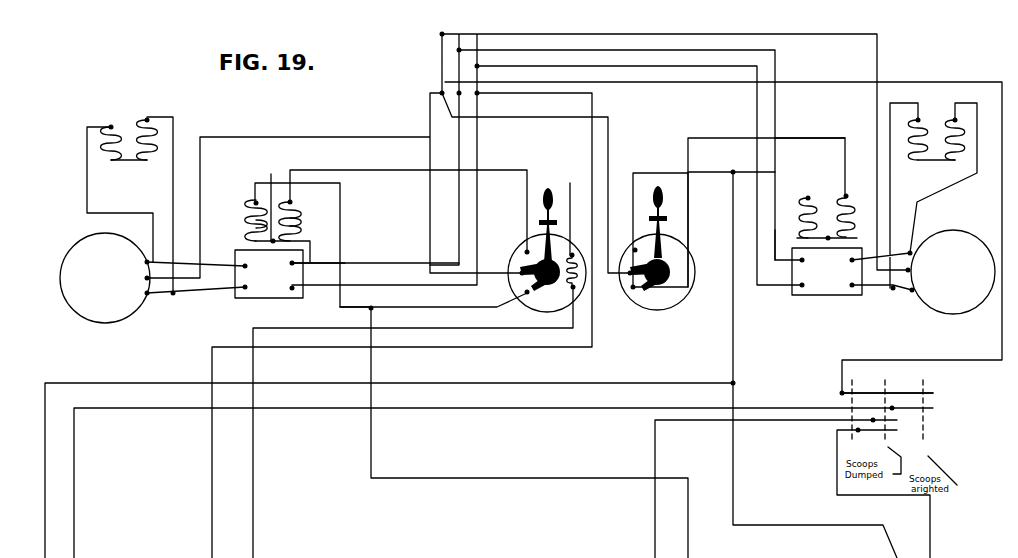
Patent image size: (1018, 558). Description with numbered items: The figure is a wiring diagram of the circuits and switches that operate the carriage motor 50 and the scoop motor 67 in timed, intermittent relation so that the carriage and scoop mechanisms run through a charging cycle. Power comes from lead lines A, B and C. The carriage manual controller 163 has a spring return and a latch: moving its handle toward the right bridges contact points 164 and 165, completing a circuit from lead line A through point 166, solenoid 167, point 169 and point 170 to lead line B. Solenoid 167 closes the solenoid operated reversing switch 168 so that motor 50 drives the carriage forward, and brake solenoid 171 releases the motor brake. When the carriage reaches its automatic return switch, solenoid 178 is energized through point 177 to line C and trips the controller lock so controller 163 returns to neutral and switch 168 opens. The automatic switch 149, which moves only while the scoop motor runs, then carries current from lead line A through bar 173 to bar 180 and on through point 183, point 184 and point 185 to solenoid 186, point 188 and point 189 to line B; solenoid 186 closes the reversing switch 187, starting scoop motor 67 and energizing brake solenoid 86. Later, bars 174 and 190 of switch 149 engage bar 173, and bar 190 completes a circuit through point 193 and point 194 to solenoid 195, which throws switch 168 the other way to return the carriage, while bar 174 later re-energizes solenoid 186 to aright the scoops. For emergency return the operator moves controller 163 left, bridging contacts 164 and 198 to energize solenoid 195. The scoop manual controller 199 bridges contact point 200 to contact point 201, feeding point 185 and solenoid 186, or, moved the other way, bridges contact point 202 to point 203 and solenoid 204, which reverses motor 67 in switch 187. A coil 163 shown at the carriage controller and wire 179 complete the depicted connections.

The lead line A is at (440, 94).
The lead line B is at (460, 132).
The lead line C is at (479, 94).
The carriage motor 50 is at (152, 278).
The scoop motor 67 is at (951, 272).
The brake-releasing solenoid 86 is at (936, 150).
The automatic switch 149 is at (887, 401).
The carriage manual controller 163 is at (580, 259).
The contact point 164 is at (519, 275).
The contact point 165 is at (525, 251).
The point 166 is at (292, 203).
The solenoid 167 is at (298, 223).
The solenoid operated reversing switch 168 is at (269, 274).
The point 169 is at (265, 198).
The point 170 is at (312, 263).
The brake-releasing solenoid 171 is at (131, 206).
The bar 173 is at (933, 393).
The bar 174 is at (893, 437).
The point 177 is at (573, 300).
The solenoid 178 is at (576, 289).
The conductor 179 is at (560, 208).
The bar 180 is at (933, 408).
The point 183 is at (758, 380).
The point 184 is at (733, 172).
The point 185 is at (808, 197).
The solenoid 186 is at (794, 209).
The solenoid operated reversing switch 187 is at (844, 271).
The point 188 is at (828, 236).
The point 189 is at (773, 242).
The bar 190 is at (900, 422).
The point 193 is at (377, 318).
The point 194 is at (254, 203).
The solenoid 195 is at (256, 226).
The contact point 198 is at (528, 294).
The scoop manual controller 199 is at (661, 241).
The contact point 200 is at (632, 289).
The contact point 201 is at (633, 250).
The contact point 202 is at (636, 247).
The point 203 is at (858, 182).
The solenoid 204 is at (857, 221).